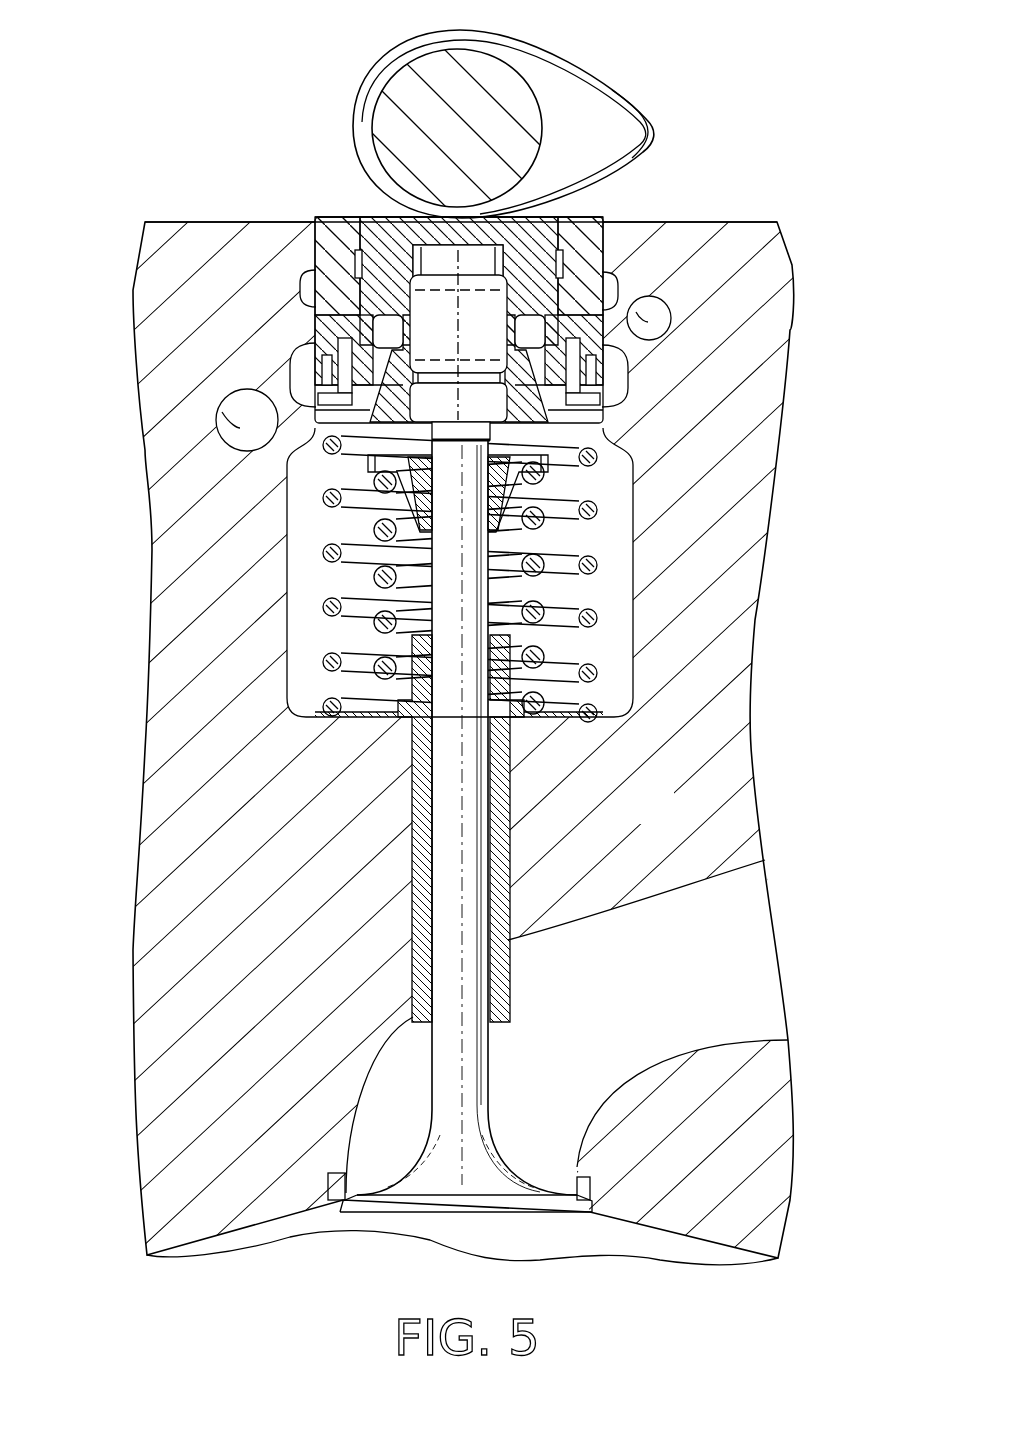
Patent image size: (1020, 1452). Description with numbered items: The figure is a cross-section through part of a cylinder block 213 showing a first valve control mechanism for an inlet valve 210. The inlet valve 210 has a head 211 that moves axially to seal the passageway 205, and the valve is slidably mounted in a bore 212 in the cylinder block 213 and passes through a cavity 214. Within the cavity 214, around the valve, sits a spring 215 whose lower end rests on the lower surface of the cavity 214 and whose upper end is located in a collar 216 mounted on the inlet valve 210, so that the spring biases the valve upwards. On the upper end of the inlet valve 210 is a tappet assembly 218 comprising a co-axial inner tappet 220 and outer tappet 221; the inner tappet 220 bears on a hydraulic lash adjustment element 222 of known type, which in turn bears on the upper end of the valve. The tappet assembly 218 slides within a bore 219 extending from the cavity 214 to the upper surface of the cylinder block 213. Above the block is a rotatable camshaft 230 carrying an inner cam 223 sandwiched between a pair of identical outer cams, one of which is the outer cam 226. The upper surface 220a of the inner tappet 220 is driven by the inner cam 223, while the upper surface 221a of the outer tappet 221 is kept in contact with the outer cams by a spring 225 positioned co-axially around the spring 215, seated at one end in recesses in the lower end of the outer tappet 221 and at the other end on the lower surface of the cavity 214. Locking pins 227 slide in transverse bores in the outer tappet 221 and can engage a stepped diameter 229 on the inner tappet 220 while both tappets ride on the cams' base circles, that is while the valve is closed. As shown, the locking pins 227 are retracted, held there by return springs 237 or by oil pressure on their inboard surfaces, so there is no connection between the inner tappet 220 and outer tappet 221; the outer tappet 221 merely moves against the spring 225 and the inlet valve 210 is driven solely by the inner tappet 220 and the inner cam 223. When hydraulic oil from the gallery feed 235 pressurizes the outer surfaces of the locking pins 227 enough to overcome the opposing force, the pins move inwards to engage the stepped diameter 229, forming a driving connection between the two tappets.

The passageway 205 is at (567, 1026).
The inlet valve 210 is at (490, 1060).
The head 211 is at (403, 1213).
The bore 212 is at (512, 968).
The cylinder block 213 is at (460, 726).
The cavity 214 is at (613, 595).
The spring 215 is at (374, 628).
The collar 216 is at (555, 468).
The tappet assembly 218 is at (286, 284).
The bore 219 is at (300, 458).
The inner tappet 220 is at (360, 218).
The upper surface 220a is at (360, 220).
The outer tappet 221 is at (603, 255).
The upper surface 221a is at (592, 217).
The hydraulic lash adjustment element 222 is at (458, 333).
The inner cam 223 is at (585, 73).
The spring 225 is at (323, 553).
The outer cam 226 is at (648, 108).
The locking pins 227 is at (385, 335).
The stepped diameter 229 is at (322, 362).
The camshaft 230 is at (455, 62).
The gallery feed 235 is at (240, 428).
The return springs 237 is at (633, 362).